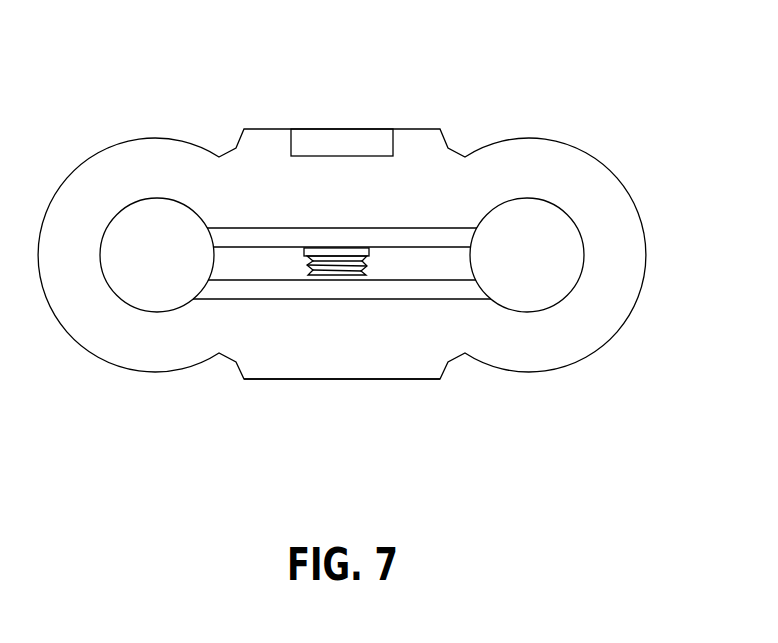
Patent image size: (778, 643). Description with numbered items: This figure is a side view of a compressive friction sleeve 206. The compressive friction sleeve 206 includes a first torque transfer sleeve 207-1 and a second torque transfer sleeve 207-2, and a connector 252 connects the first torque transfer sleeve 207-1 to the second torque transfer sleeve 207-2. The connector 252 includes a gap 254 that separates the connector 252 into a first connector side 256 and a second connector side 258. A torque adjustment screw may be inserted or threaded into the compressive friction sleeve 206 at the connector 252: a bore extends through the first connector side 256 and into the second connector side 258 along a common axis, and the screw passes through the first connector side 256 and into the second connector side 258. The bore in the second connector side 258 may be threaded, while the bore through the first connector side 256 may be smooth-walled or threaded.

The compressive friction sleeve 206 is at (346, 247).
The first torque transfer sleeve 207-1 is at (145, 268).
The second torque transfer sleeve 207-2 is at (548, 268).
The connector 252 is at (418, 398).
The gap 254 is at (258, 262).
The first connector side 256 is at (255, 142).
The second connector side 258 is at (350, 360).